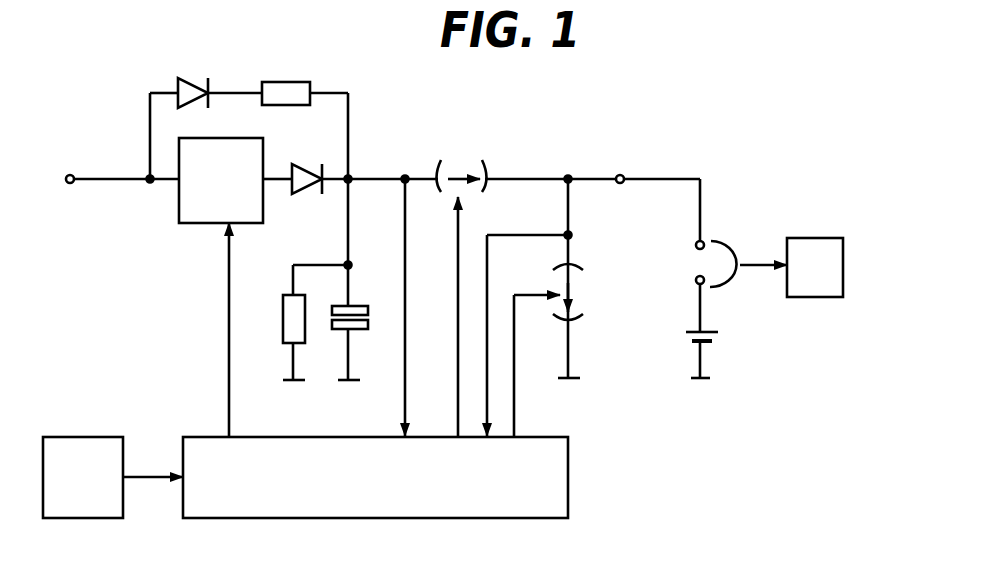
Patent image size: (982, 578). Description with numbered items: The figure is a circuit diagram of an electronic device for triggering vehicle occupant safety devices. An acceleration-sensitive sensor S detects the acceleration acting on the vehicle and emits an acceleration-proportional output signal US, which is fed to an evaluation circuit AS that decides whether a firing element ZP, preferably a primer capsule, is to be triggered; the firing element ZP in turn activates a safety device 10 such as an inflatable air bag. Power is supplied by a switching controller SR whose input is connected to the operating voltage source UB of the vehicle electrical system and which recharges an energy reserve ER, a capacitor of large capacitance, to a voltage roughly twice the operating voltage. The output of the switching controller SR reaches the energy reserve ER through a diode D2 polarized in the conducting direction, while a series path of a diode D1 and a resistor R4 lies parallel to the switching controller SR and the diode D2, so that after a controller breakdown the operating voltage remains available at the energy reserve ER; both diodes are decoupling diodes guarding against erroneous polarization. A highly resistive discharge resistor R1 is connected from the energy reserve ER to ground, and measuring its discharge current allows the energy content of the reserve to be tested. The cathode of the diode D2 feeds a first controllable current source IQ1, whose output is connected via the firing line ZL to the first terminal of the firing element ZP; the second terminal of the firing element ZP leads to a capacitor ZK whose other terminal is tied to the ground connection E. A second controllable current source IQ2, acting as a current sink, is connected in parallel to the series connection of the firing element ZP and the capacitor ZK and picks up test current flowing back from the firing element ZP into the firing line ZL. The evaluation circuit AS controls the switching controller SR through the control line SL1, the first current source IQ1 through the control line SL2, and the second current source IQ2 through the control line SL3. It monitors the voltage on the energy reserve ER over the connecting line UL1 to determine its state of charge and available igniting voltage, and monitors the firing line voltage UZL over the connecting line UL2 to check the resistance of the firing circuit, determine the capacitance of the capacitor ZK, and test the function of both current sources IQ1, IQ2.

The operating voltage source UB is at (70, 156).
The diode D1 is at (184, 70).
The resistor R4 is at (293, 70).
The switching controller SR is at (221, 180).
The diode D2 is at (312, 158).
The first controllable current source IQ1 is at (458, 156).
The firing line ZL is at (655, 156).
The firing element ZP is at (709, 241).
The safety device 10 is at (834, 225).
The capacitor ZK is at (708, 338).
The ground connection E is at (699, 377).
The discharge resistor R1 is at (283, 322).
The energy reserve ER is at (363, 322).
The control line SL1 is at (229, 376).
The connecting line UL1 is at (405, 345).
The control line SL2 is at (458, 273).
The firing line voltage UZL is at (530, 209).
The connecting line UL2 is at (490, 293).
The second controllable current source IQ2 is at (598, 306).
The control line SL3 is at (515, 362).
The acceleration-sensitive sensor S is at (83, 477).
The output signal US is at (153, 453).
The evaluation circuit AS is at (375, 477).